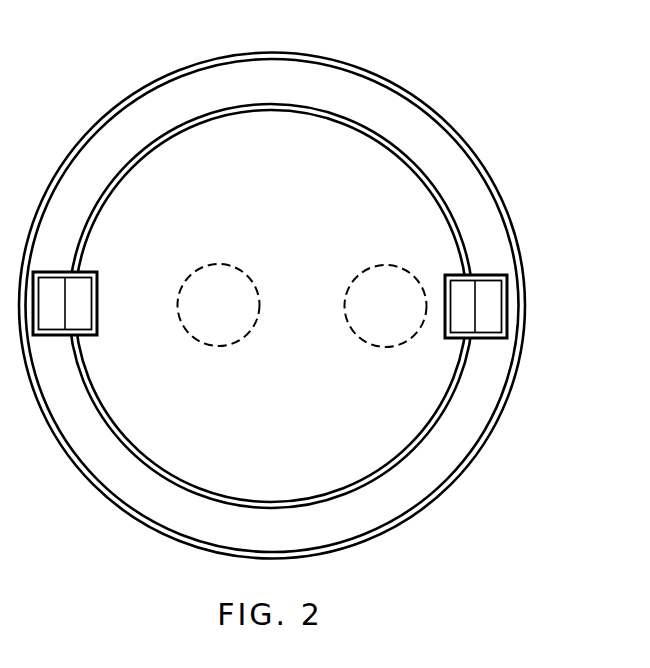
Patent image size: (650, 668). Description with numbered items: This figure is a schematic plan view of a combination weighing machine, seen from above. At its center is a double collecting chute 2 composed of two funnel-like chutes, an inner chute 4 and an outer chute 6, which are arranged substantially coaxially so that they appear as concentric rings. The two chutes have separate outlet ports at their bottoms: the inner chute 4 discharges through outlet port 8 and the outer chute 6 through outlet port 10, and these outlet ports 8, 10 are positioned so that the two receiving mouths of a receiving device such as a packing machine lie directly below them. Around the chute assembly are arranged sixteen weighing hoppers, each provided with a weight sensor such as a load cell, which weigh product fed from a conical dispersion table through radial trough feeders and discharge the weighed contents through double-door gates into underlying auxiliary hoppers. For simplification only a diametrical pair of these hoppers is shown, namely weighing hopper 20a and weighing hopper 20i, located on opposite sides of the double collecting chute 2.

The double collecting chute 2 is at (328, 48).
The outer chute 6 is at (393, 110).
The inner chute 4 is at (408, 197).
The outlet port 10 is at (207, 316).
The outlet port 8 is at (395, 316).
The weighing hopper 20a is at (97, 272).
The weighing hopper 20i is at (445, 275).